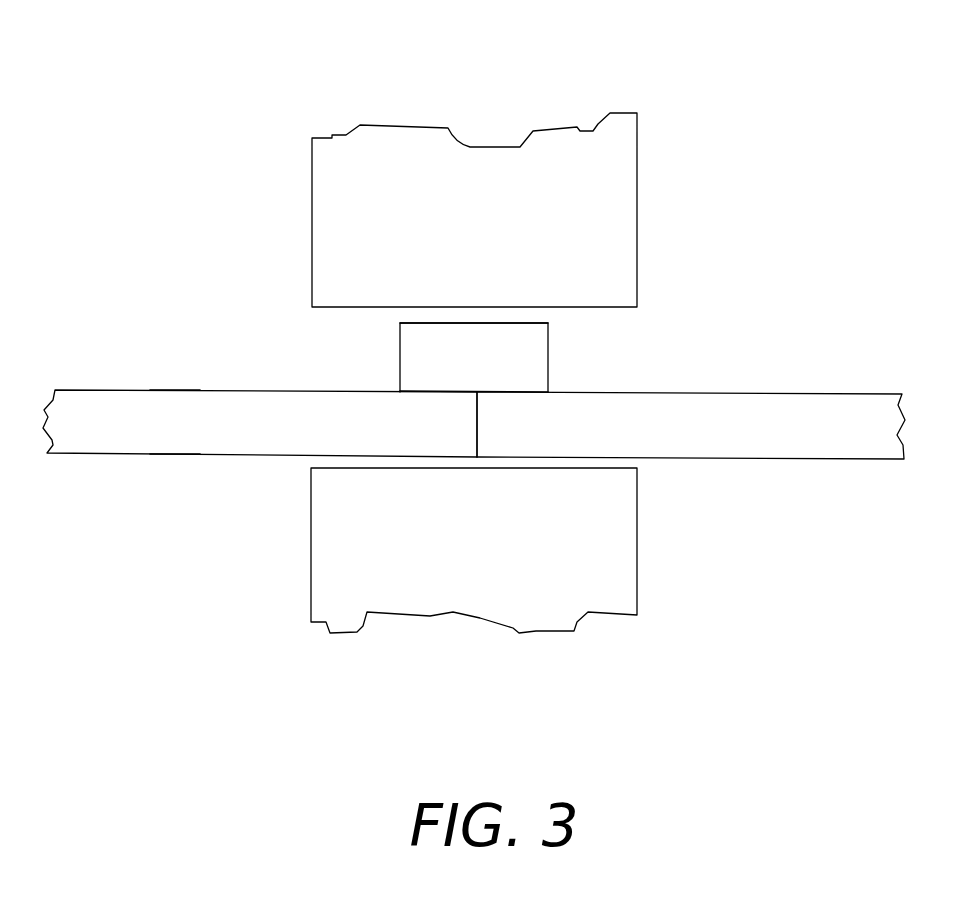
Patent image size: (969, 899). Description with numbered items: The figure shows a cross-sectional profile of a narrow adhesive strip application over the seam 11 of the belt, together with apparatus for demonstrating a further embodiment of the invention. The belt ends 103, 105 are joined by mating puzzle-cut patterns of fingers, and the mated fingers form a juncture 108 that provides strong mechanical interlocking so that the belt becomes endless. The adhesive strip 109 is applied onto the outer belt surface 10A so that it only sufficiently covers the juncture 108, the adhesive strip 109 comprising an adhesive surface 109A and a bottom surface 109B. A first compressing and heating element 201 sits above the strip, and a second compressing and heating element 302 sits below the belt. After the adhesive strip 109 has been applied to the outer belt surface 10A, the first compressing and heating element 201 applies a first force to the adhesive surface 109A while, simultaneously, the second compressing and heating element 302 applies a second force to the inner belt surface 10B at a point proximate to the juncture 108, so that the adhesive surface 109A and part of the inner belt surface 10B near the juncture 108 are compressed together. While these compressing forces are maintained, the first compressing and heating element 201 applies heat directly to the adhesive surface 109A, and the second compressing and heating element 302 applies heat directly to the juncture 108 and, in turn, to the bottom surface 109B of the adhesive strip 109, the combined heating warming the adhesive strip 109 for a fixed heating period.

The seam 11 is at (700, 305).
The outer belt surface 10A is at (173, 378).
The inner belt surface 10B is at (173, 466).
The belt end 103 is at (89, 435).
The belt end 105 is at (842, 440).
The juncture 108 is at (478, 430).
The adhesive strip 109 is at (398, 360).
The adhesive surface 109A is at (422, 322).
The bottom surface of adhesive strip 109B is at (448, 391).
The first compressing and heating element 201 is at (465, 187).
The second compressing and heating element 302 is at (463, 563).